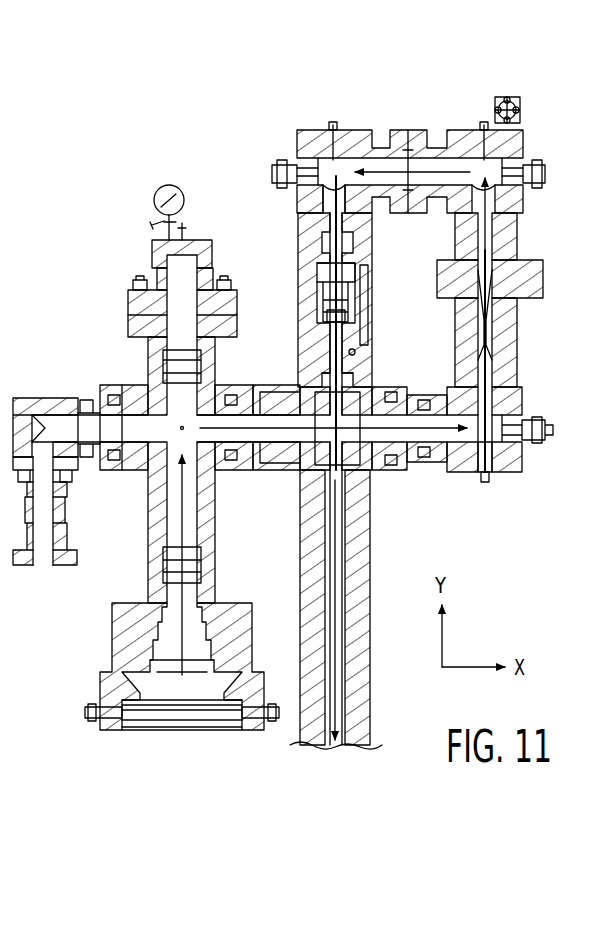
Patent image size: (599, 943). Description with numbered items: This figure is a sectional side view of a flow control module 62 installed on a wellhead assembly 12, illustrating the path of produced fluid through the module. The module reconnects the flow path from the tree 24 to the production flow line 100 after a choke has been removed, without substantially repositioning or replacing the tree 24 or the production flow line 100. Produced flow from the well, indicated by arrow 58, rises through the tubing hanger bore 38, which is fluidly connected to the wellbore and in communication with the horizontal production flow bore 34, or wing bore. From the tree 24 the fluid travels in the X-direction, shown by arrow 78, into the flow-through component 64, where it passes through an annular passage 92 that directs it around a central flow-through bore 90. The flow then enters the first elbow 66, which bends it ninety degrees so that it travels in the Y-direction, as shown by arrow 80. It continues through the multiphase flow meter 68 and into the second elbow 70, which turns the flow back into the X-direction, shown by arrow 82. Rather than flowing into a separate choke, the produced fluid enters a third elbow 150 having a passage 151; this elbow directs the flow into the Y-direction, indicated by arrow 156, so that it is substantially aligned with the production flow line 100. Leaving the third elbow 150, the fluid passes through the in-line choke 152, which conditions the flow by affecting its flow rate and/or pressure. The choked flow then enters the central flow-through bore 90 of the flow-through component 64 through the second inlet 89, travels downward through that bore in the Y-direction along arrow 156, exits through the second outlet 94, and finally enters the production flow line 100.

The wellhead assembly 12 is at (70, 640).
The tree 24 is at (108, 297).
The production flow bore 34 is at (247, 418).
The tubing hanger bore 38 is at (190, 525).
The arrow indicating produced flow 58 is at (190, 562).
The flow control module 62 is at (520, 82).
The flow-through component 64 is at (365, 455).
The first elbow 66 is at (500, 460).
The multiphase flow meter 68 is at (510, 270).
The second elbow 70 is at (515, 165).
The arrow indicating X-direction flow 78 is at (248, 455).
The arrow indicating Y-direction flow 80 is at (492, 340).
The arrow indicating X-direction flow 82 is at (400, 177).
The second inlet 89 is at (330, 392).
The central flow-through bore 90 is at (340, 412).
The annular passage 92 is at (310, 442).
The second outlet 94 is at (340, 475).
The production flow line 100 is at (370, 583).
The third elbow 150 is at (305, 138).
The passage 151 is at (342, 165).
The in-line choke 152 is at (305, 280).
The arrow indicating Y-direction flow 156 is at (340, 335).